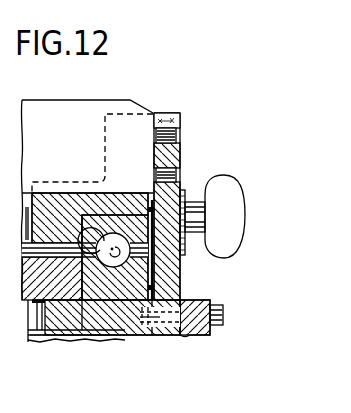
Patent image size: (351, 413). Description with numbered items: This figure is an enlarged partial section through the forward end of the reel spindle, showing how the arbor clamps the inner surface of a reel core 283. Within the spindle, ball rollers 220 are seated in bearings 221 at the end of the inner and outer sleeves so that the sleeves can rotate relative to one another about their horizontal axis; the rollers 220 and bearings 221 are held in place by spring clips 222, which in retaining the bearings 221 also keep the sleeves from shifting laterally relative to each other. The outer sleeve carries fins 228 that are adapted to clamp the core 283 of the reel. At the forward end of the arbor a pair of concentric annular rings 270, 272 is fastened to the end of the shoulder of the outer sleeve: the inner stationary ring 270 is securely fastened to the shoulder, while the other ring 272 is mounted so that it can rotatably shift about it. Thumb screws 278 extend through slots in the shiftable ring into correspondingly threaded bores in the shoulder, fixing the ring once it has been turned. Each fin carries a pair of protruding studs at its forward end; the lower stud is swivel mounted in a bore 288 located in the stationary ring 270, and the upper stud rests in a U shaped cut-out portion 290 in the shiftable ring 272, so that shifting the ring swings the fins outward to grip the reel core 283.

The ball roller 220 is at (109, 240).
The bearing 221 is at (100, 278).
The spring clip 222 is at (140, 300).
The fin 228 is at (55, 110).
The inner stationary ring 270 is at (163, 280).
The inner ring 272 is at (177, 152).
The thumb screw 278 is at (222, 259).
The reel core 283 is at (62, 353).
The bore 288 is at (178, 176).
The U shaped cut-out portion 290 is at (178, 118).